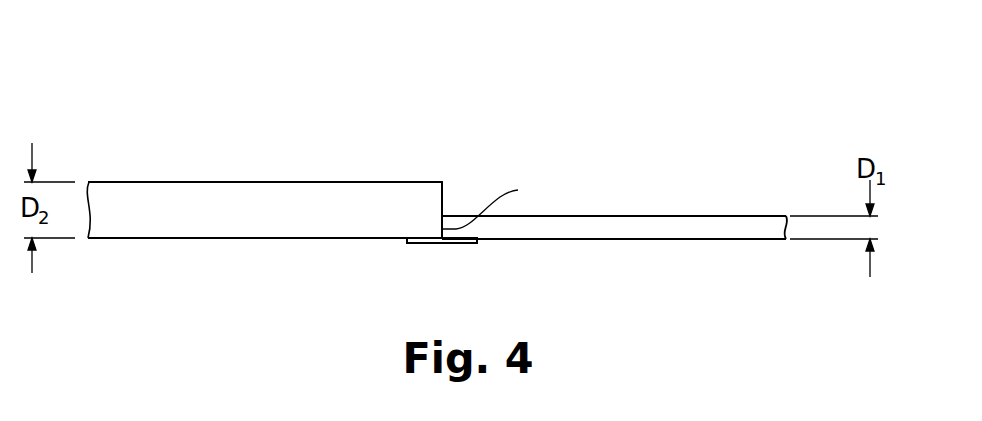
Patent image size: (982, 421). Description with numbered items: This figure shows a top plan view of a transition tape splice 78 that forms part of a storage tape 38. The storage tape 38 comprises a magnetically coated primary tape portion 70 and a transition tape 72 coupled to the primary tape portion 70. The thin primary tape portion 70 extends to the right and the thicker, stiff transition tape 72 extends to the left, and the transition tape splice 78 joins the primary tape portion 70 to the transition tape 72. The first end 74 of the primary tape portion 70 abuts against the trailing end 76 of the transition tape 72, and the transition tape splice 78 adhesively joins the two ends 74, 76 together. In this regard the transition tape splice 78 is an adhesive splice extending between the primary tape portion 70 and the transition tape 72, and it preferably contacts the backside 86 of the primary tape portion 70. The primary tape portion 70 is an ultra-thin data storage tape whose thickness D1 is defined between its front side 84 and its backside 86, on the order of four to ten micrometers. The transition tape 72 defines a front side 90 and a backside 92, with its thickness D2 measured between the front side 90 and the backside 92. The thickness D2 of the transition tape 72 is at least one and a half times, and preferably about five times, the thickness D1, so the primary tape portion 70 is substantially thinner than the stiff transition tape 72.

The storage tape 38 is at (599, 64).
The primary tape portion 70 is at (672, 240).
The transition tape 72 is at (232, 227).
The first end 74 is at (495, 200).
The trailing end 76 is at (443, 195).
The transition tape splice 78 is at (465, 245).
The front side 84 is at (642, 216).
The backside 86 is at (583, 240).
The front side 90 is at (348, 182).
The backside 92 is at (320, 238).